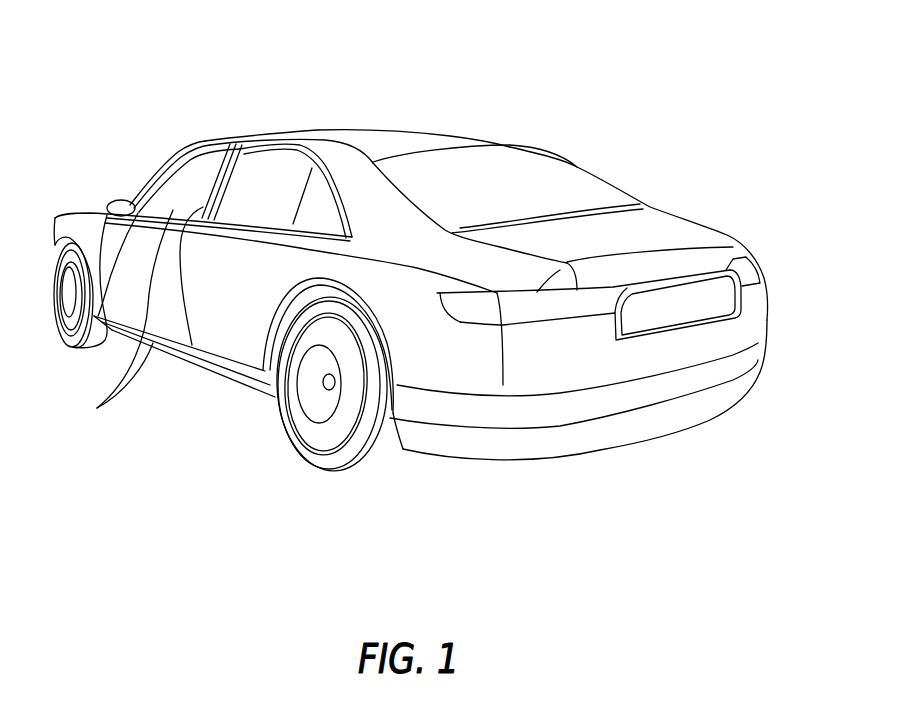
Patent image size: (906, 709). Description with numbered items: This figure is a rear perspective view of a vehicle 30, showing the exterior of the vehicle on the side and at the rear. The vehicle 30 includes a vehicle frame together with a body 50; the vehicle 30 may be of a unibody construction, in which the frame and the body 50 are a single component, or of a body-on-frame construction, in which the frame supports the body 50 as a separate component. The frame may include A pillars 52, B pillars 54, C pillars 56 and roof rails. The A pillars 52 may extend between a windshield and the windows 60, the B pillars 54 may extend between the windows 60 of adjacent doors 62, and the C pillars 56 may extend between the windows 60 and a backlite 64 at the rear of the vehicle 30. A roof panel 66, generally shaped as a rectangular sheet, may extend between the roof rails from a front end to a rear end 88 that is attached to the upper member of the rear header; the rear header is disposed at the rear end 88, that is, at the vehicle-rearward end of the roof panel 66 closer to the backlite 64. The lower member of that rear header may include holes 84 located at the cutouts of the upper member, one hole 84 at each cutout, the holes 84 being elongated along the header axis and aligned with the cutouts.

The vehicle 30 is at (706, 66).
The body 50 is at (221, 383).
The A pillars 52 is at (148, 173).
The B pillars 54 is at (218, 176).
The C pillars 56 is at (343, 177).
The windows 60 is at (90, 352).
The doors 62 is at (97, 408).
The backlite 64 is at (580, 167).
The roof panel 66 is at (467, 137).
The holes 84 is at (243, 141).
The rear end 88 is at (430, 155).